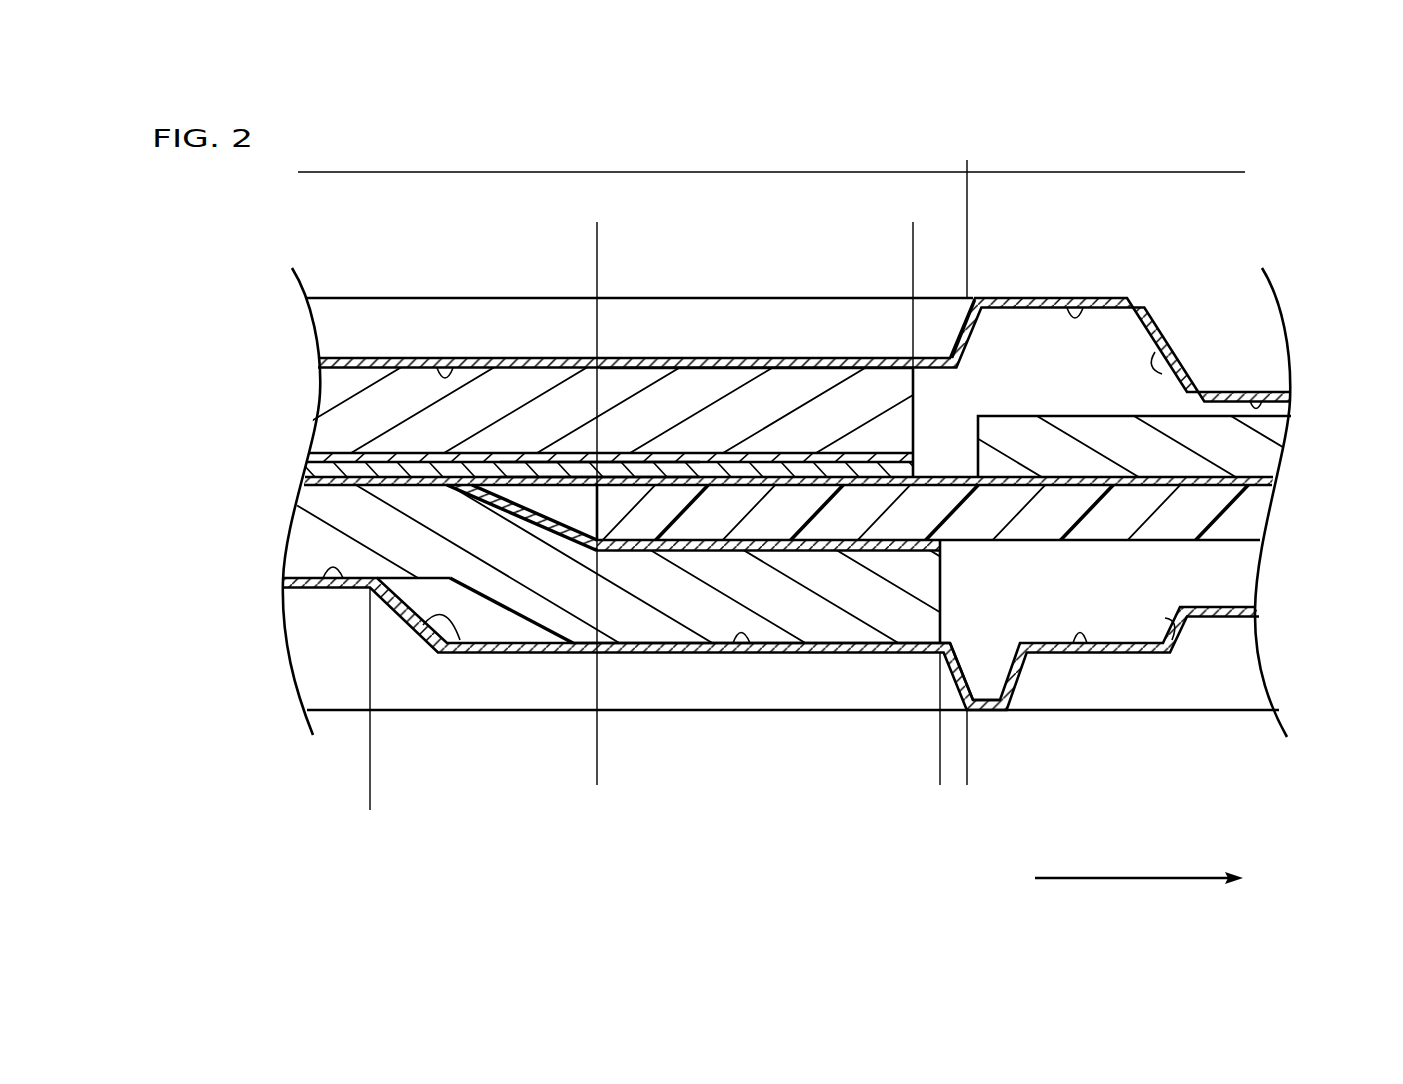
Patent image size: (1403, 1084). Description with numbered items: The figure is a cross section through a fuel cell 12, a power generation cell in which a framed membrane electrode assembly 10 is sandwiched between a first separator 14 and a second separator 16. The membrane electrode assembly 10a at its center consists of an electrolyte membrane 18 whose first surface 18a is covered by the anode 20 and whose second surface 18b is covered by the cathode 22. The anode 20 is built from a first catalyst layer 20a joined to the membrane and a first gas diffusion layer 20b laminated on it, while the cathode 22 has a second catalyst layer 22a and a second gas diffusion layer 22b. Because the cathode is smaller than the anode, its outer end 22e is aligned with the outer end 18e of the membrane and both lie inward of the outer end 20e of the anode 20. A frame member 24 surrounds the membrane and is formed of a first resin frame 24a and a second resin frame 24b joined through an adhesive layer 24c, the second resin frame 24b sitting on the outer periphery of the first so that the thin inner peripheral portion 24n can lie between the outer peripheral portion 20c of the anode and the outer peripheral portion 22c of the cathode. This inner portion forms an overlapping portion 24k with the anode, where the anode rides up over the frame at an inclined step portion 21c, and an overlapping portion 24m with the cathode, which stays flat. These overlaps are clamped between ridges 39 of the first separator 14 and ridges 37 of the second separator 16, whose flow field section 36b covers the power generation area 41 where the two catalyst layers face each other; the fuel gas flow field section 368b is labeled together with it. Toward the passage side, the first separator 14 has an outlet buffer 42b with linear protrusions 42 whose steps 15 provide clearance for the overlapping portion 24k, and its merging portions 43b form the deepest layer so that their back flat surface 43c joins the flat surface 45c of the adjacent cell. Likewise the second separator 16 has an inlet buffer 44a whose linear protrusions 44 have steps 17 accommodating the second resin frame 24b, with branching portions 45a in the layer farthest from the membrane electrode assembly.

The framed membrane electrode assembly 10 is at (751, 514).
The membrane electrode assembly 10a is at (694, 505).
The fuel cell 12 is at (751, 514).
The first separator 14 is at (310, 591).
The steps 15 is at (460, 640).
The second separator 16 is at (347, 362).
The steps 17 is at (1162, 372).
The electrolyte membrane 18 is at (313, 470).
The first surface 18a is at (575, 476).
The second surface 18b is at (565, 462).
The outer end 18e is at (913, 473).
The anode 20 is at (688, 586).
The first catalyst layer 20a is at (307, 482).
The first gas diffusion layer 20b is at (313, 553).
The outer peripheral portion 20c is at (907, 622).
The outer end 20e is at (940, 573).
The inclined step portion 21c is at (503, 595).
The cathode 22 is at (567, 389).
The second catalyst layer 22a is at (342, 457).
The second gas diffusion layer 22b is at (333, 393).
The outer peripheral portion 22c is at (830, 417).
The outer end 22e is at (913, 385).
The frame member 24 is at (992, 490).
The first resin frame 24a is at (1240, 522).
The second resin frame 24b is at (1263, 433).
The adhesive layer 24c is at (1257, 482).
The overlapping portion 24k is at (928, 782).
The overlapping portion 24m is at (901, 234).
The inner peripheral portion 24n is at (837, 513).
The flow field section 36b is at (606, 158).
The fuel gas flow field section 368b is at (775, 158).
The ridges 37 is at (453, 368).
The ridges 39 is at (343, 578).
The power generation area 41 is at (358, 804).
The linear protrusions 42 is at (1074, 645).
The outlet buffer 42b is at (967, 778).
The merging portions 43b is at (980, 697).
The flat surface 43c is at (1000, 710).
The linear protrusions 44 is at (1255, 403).
The inlet buffer 44a is at (1108, 158).
The branching portions 45a is at (1082, 310).
The flat surface 45c is at (998, 297).